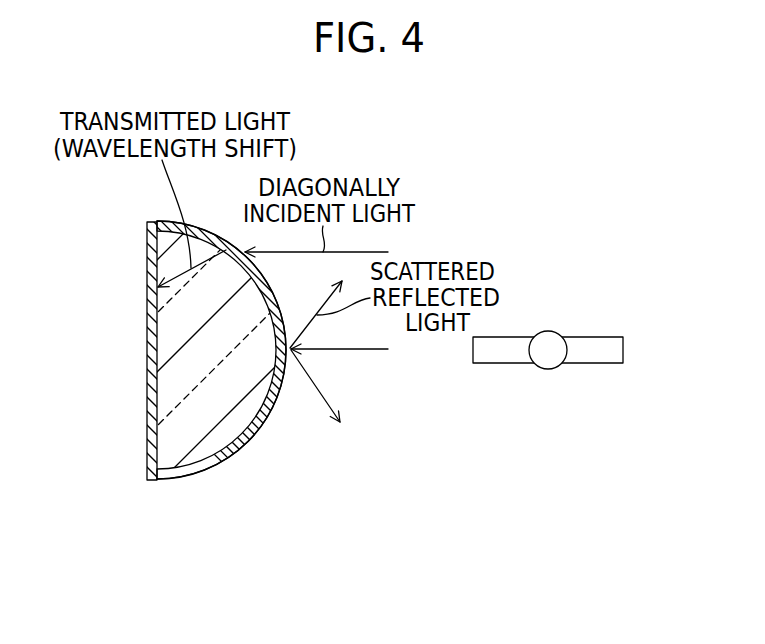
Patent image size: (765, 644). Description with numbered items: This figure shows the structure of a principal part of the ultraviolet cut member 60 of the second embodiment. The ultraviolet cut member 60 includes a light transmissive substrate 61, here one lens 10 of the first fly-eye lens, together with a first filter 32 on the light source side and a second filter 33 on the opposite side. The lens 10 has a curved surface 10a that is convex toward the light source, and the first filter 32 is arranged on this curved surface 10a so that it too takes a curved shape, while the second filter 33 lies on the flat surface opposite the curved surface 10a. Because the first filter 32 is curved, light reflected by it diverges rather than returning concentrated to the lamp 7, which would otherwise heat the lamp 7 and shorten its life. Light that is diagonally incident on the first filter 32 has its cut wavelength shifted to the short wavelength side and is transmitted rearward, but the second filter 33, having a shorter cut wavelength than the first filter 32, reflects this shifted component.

The lamp 7 is at (565, 317).
The lens 10 is at (222, 350).
The curved surface 10a is at (283, 398).
The first filter 32 is at (262, 418).
The second filter 33 is at (150, 448).
The ultraviolet cut member 60 is at (335, 372).
The light transmissive substrate 61 is at (212, 415).